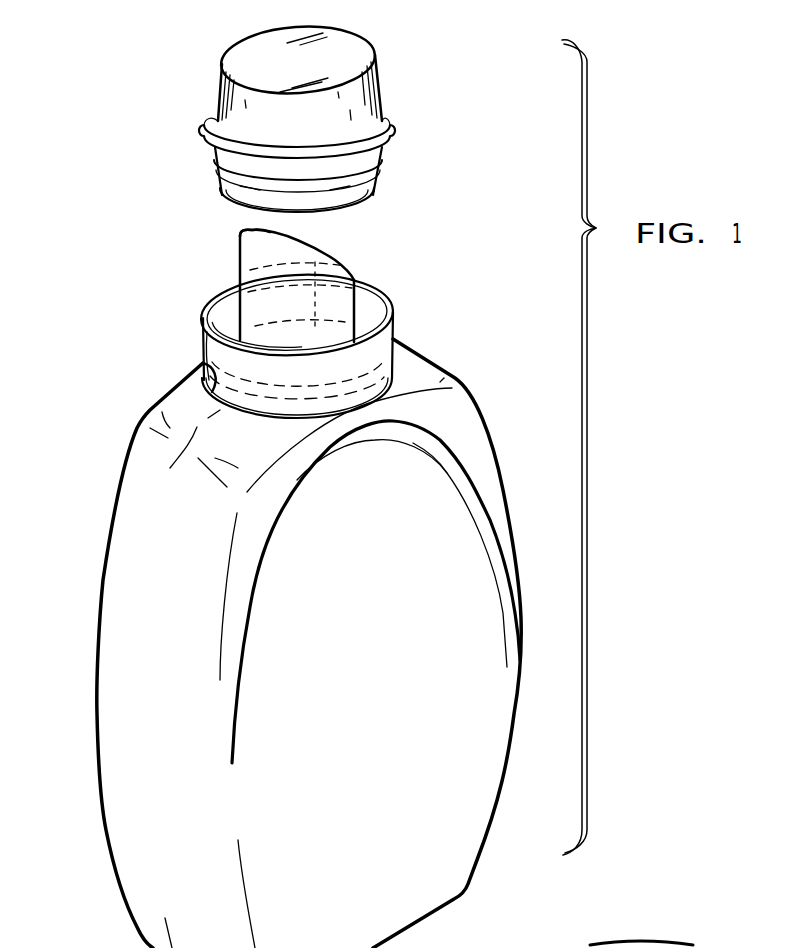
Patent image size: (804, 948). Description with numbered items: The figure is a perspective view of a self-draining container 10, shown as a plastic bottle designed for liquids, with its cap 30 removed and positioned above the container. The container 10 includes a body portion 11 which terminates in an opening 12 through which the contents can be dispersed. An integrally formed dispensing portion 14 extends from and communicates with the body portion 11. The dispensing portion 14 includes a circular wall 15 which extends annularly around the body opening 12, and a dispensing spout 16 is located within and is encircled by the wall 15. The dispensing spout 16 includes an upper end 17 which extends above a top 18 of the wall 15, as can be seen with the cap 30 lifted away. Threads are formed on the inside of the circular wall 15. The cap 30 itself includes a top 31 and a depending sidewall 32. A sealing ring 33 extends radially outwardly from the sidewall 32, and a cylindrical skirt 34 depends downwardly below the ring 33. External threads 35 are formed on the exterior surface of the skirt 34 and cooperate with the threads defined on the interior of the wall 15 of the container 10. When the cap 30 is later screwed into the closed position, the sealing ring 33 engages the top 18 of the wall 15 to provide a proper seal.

The self-draining container 10 is at (100, 868).
The body portion 11 is at (388, 737).
The opening 12 is at (203, 362).
The dispensing portion 14 is at (400, 313).
The circular wall 15 is at (203, 350).
The dispensing spout 16 is at (340, 267).
The upper end 17 is at (243, 231).
The top 18 is at (382, 290).
The cap 30 is at (297, 130).
The top 31 is at (308, 75).
The sidewall 32 is at (312, 142).
The sealing ring 33 is at (205, 127).
The cylindrical skirt 34 is at (380, 168).
The external threads 35 is at (330, 208).